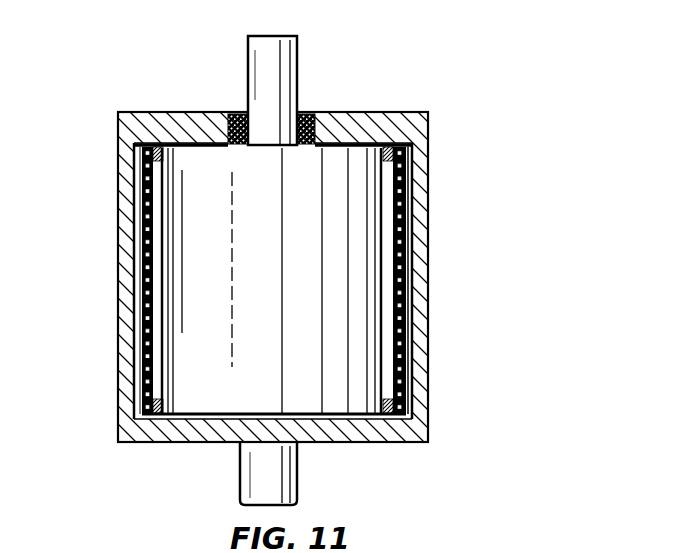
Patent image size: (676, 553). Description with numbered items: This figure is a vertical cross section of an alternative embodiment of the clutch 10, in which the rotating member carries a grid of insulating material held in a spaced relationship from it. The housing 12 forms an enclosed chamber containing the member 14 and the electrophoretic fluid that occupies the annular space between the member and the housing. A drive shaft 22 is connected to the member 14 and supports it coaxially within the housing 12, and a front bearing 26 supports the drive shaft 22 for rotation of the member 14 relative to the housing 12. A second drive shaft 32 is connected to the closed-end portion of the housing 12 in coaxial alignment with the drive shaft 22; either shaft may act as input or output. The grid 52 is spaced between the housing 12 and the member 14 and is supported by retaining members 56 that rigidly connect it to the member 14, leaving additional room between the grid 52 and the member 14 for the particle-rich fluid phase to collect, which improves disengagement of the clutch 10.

The clutch 10 is at (368, 84).
The housing 12 is at (148, 125).
The member 14 is at (266, 219).
The drive shaft 22 is at (257, 48).
The front bearing 26 is at (310, 113).
The drive shaft 32 is at (284, 478).
The grid 52 is at (136, 204).
The retaining members 56 is at (158, 156).